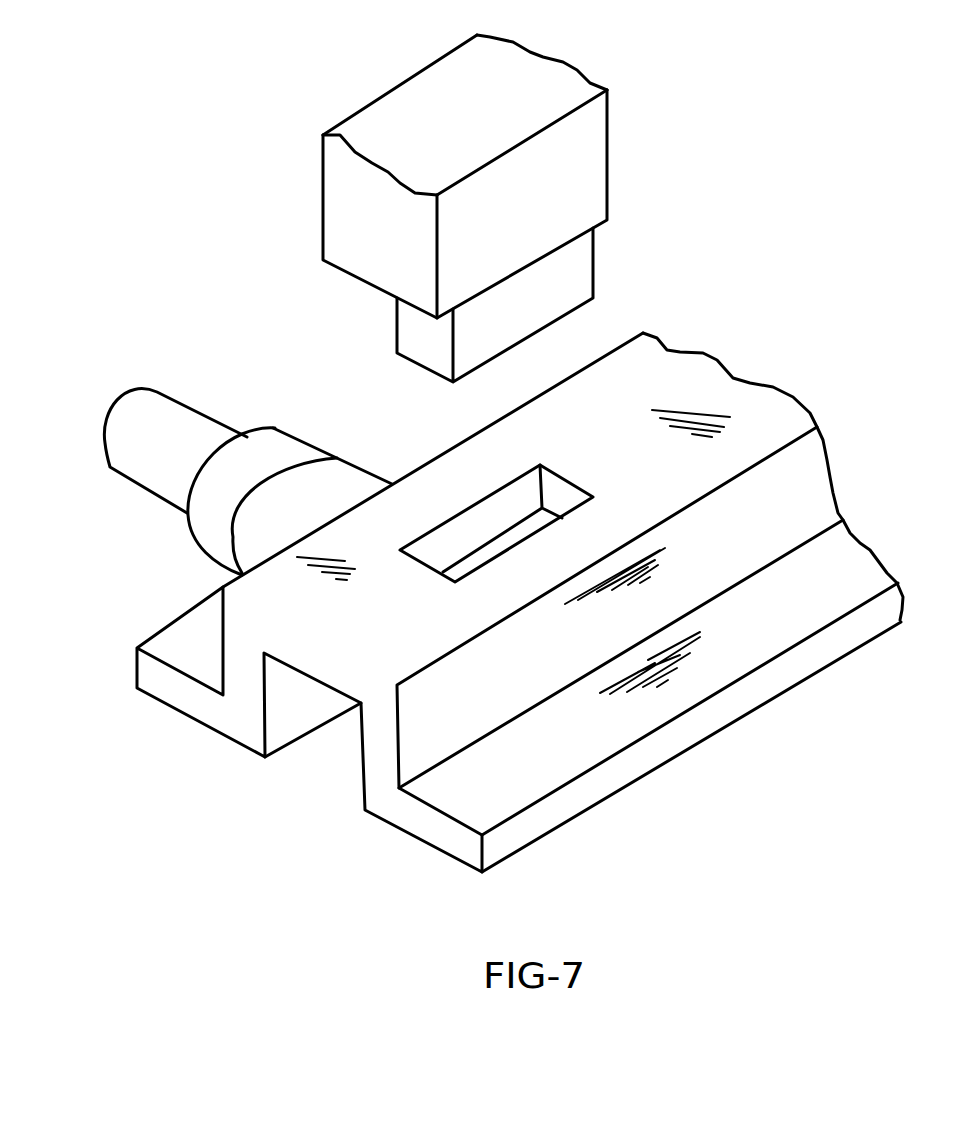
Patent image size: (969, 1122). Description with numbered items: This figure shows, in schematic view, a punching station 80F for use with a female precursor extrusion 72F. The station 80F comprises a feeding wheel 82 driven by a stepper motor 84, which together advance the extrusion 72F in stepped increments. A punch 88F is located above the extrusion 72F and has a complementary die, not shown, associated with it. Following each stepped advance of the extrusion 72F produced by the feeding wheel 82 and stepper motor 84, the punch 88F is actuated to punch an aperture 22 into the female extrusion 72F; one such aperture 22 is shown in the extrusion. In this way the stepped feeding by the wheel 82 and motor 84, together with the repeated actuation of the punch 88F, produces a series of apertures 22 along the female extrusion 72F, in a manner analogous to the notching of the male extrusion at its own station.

The female precursor extrusion 72F is at (433, 458).
The aperture 22 is at (578, 481).
The punch 88F is at (370, 268).
The punching station 80F is at (278, 388).
The feeding wheel 82 is at (217, 540).
The stepper motor 84 is at (145, 455).